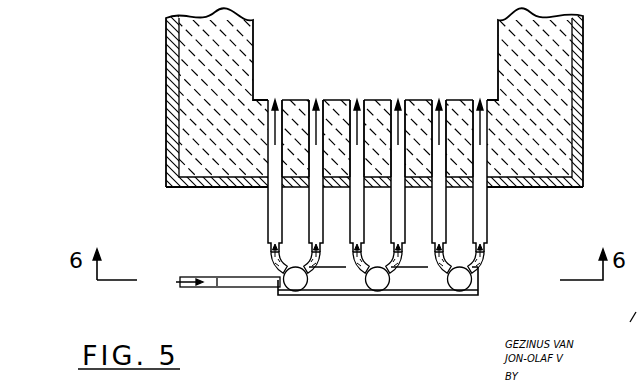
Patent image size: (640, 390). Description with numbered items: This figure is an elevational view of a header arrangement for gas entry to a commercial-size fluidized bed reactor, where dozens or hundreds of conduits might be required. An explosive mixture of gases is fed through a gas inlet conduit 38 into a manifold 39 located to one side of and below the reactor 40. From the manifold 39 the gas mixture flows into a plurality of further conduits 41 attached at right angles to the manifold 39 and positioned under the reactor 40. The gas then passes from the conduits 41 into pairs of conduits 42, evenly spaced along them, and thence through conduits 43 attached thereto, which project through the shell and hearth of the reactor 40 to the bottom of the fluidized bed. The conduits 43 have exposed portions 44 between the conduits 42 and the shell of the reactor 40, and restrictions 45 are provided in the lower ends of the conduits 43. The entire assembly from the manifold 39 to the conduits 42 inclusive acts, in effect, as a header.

The gas inlet conduit 38 is at (240, 287).
The manifold 39 is at (315, 293).
The reactor 40 is at (585, 82).
The further conduits 41 is at (432, 294).
The pairs of conduits 42 is at (272, 265).
The conduits 43 is at (365, 118).
The exposed portions 44 is at (309, 208).
The restrictions 45 is at (345, 264).